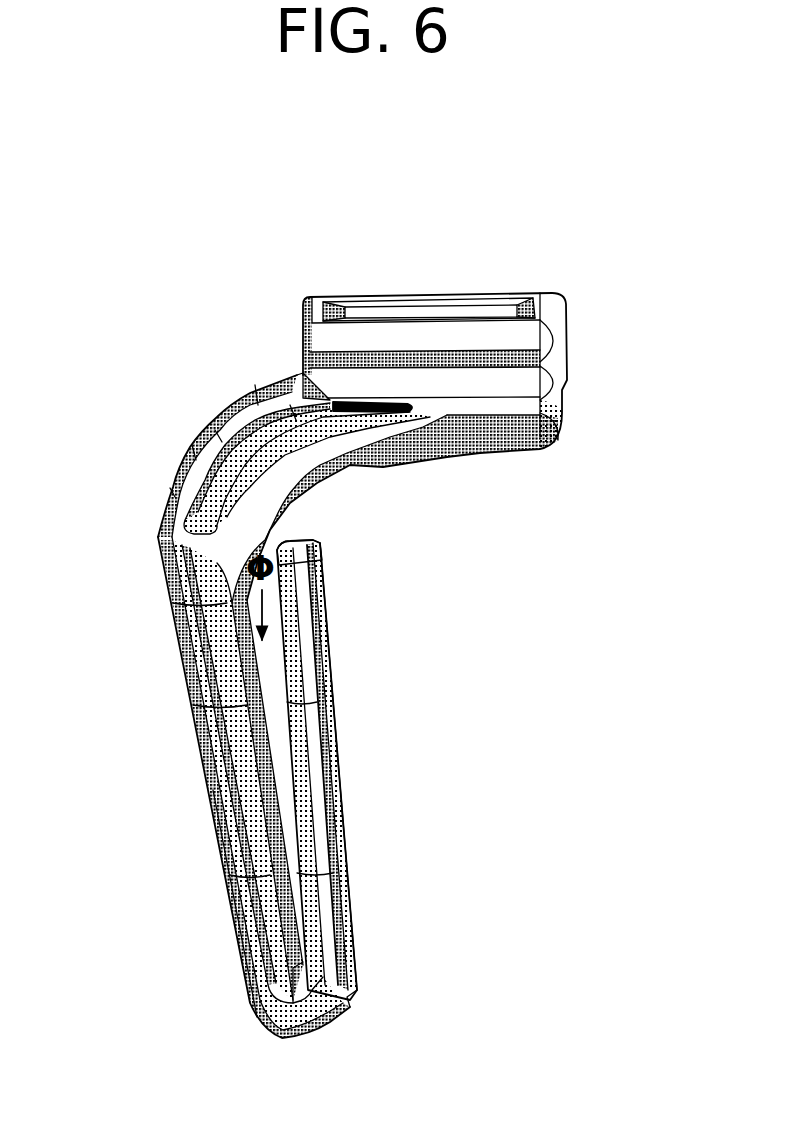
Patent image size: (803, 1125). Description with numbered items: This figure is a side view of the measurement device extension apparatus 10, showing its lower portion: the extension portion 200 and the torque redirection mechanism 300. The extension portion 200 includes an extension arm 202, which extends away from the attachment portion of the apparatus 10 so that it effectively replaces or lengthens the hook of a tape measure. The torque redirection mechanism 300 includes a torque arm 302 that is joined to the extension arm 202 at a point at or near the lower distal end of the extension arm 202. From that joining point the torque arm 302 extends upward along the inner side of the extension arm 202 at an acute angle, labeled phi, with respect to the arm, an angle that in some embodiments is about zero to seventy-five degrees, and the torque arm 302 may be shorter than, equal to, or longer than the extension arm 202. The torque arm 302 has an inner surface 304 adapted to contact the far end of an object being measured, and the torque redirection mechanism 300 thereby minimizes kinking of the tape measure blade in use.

The apparatus 10 is at (553, 213).
The extension portion 200 is at (110, 762).
The extension arm 202 is at (218, 930).
The torque redirection mechanism 300 is at (425, 586).
The torque arm 302 is at (319, 547).
The inner surface 304 is at (350, 738).